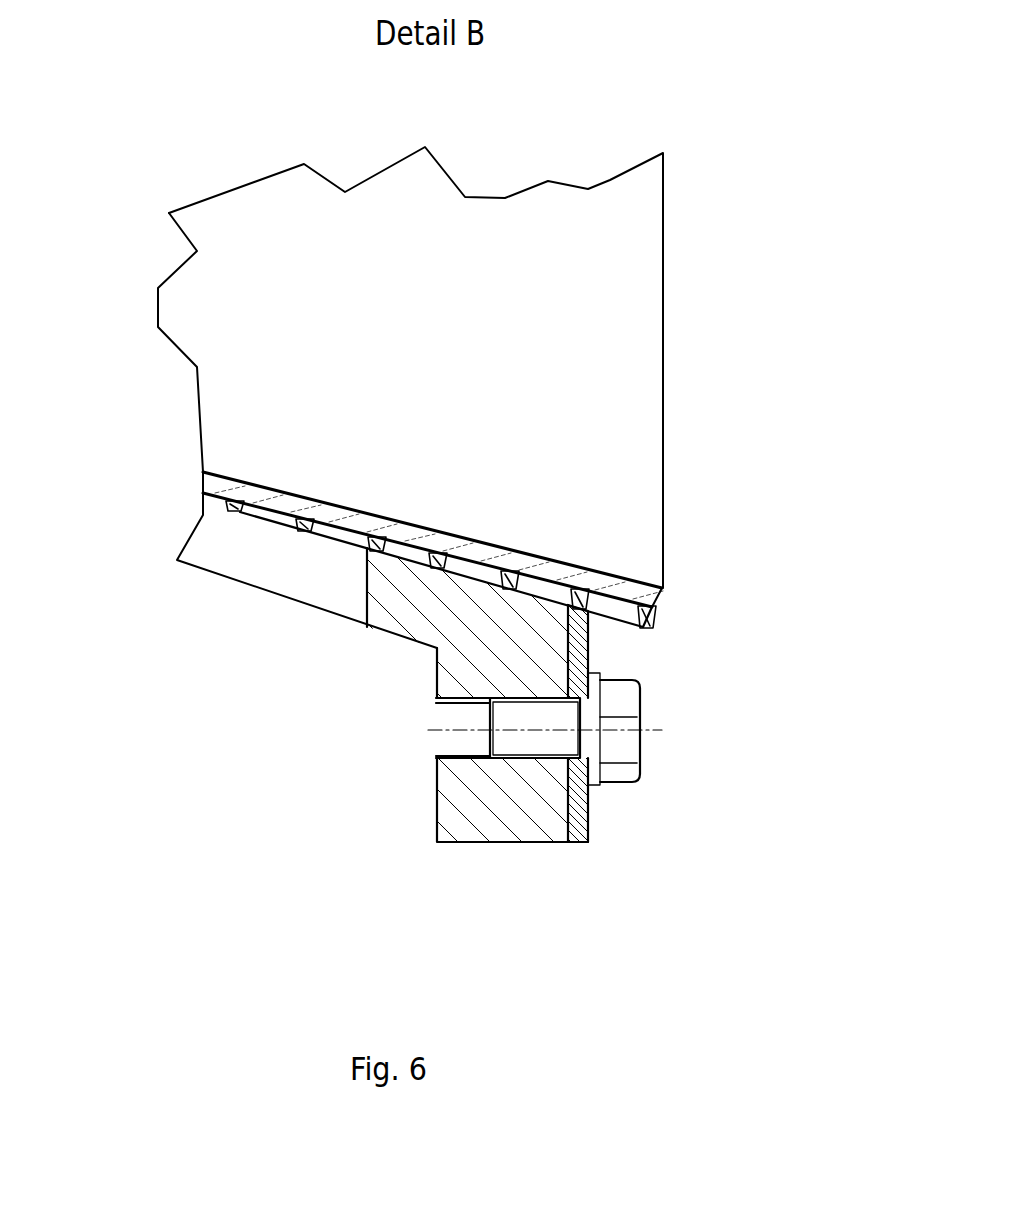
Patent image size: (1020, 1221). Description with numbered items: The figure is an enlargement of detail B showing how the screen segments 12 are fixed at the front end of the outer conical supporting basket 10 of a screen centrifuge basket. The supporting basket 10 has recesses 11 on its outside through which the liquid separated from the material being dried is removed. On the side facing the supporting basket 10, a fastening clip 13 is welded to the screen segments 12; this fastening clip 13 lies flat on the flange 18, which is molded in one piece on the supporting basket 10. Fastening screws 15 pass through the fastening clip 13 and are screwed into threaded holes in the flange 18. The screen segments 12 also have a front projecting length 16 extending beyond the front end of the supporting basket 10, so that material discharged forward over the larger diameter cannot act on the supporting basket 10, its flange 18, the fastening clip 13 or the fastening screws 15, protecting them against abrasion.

The supporting basket 10 is at (412, 618).
The recesses 11 is at (290, 558).
The screen segments 12 is at (478, 542).
The fastening clip 13 is at (578, 818).
The fastening screws 15 is at (623, 701).
The front projecting length 16 is at (640, 595).
The flange 18 is at (482, 802).